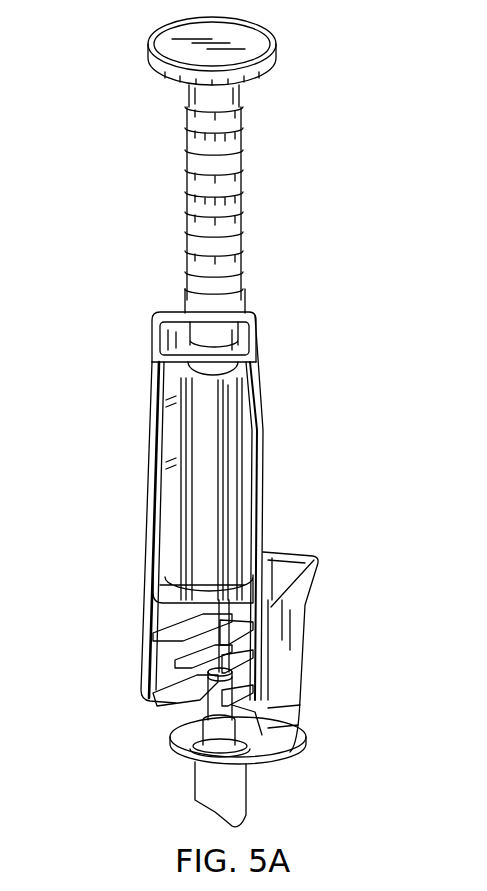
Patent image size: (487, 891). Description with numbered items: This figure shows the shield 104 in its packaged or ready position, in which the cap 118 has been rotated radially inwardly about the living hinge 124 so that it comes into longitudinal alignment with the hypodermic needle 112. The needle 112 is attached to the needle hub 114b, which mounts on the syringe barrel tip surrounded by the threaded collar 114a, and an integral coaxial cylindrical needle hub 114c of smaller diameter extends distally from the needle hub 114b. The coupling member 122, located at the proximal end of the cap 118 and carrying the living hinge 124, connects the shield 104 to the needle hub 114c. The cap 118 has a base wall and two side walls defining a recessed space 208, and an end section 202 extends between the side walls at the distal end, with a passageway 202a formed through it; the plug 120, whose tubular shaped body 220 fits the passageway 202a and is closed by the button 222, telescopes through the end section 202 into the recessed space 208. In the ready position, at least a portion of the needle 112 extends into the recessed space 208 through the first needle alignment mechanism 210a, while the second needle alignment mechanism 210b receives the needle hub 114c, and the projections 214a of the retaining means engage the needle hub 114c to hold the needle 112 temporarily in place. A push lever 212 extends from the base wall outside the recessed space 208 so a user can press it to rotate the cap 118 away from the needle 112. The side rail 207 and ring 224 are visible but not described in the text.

The shield 104 is at (158, 195).
The plug 120 is at (258, 119).
The button 222 is at (276, 43).
The tubular shaped body 220 is at (228, 222).
The rod ring 224 is at (238, 192).
The end section 202 is at (150, 310).
The passageway 202a is at (265, 303).
The holder side rail 207 is at (157, 428).
The recessed space 208 is at (198, 462).
The cap 118 is at (263, 450).
The hypodermic needle 112 is at (228, 488).
The push lever 212 is at (293, 563).
The first needle alignment mechanism 210a is at (255, 638).
The second needle alignment mechanism 210b is at (168, 688).
The projections 214a is at (238, 698).
The needle hub 114c is at (220, 712).
The needle hub 114b is at (215, 733).
The coupling member 122 is at (198, 755).
The living hinge 124 is at (282, 754).
The threaded collar 114a is at (202, 794).